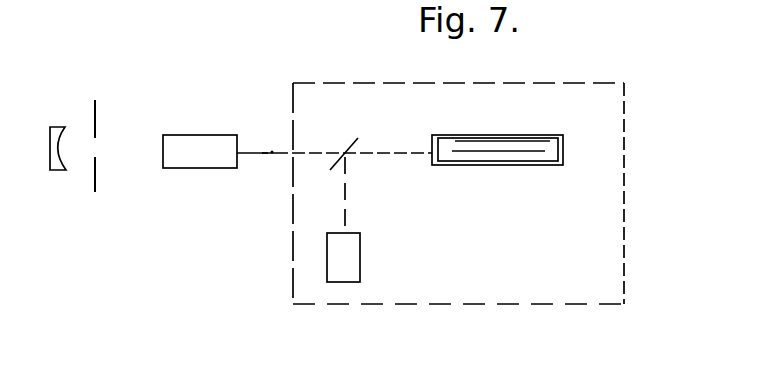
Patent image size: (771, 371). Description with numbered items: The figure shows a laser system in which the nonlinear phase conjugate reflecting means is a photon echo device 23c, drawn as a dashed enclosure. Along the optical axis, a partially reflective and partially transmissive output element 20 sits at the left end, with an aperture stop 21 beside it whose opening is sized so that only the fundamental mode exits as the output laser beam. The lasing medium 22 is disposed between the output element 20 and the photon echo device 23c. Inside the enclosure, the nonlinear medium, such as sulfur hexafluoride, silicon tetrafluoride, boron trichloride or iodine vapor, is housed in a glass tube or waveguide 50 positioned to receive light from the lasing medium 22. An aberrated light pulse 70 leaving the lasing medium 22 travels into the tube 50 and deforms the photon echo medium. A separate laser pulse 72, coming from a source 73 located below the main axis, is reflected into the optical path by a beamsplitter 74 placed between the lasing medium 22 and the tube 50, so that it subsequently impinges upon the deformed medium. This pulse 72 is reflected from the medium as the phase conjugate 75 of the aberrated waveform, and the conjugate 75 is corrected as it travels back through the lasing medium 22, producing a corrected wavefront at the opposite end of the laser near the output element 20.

The output element 20 is at (50, 127).
The aperture stop 21 is at (95, 105).
The lasing medium 22 is at (165, 170).
The photon echo device 23c is at (340, 298).
The nonlinear medium tube 50 is at (563, 138).
The aberrated light pulse 70 is at (272, 151).
The laser pulse 72 is at (349, 217).
The laser pulse source 73 is at (360, 233).
The beamsplitter 74 is at (349, 146).
The phase conjugate 75 is at (267, 157).